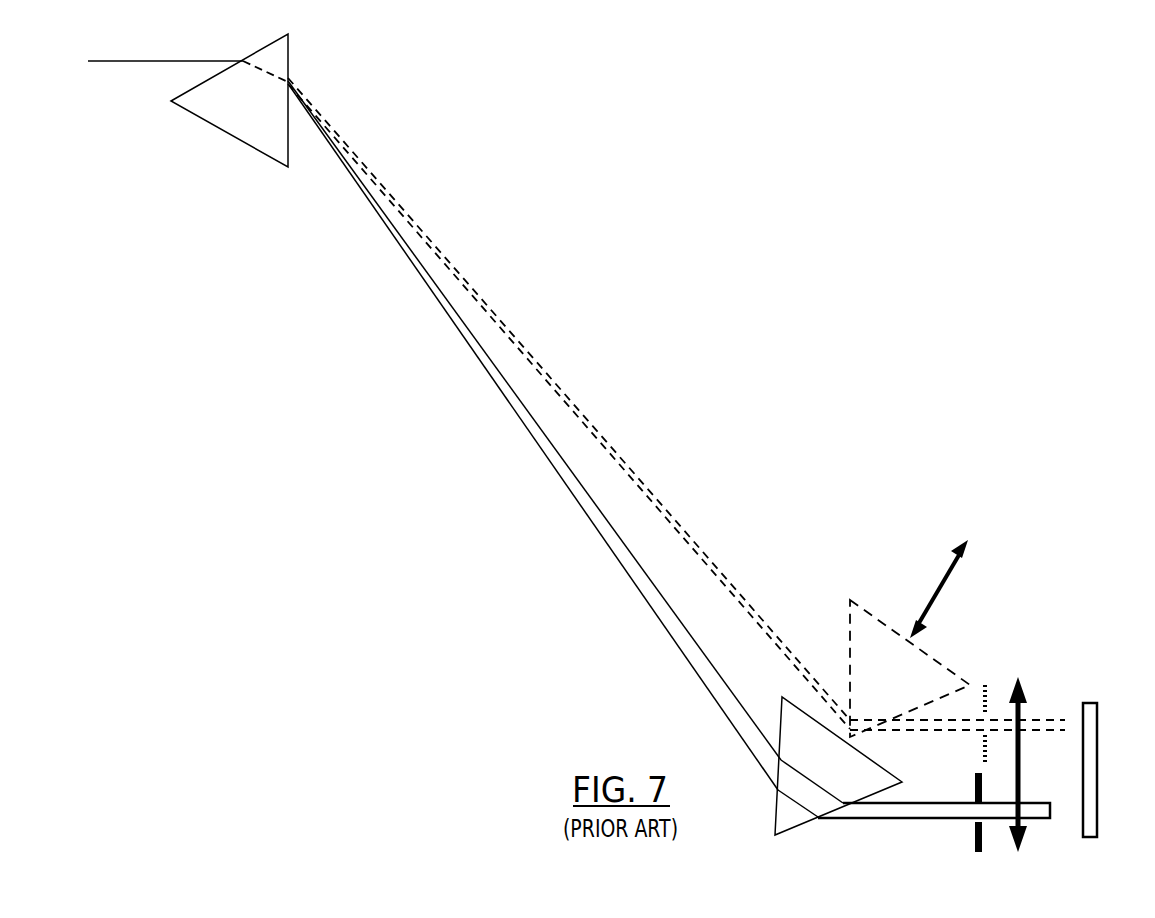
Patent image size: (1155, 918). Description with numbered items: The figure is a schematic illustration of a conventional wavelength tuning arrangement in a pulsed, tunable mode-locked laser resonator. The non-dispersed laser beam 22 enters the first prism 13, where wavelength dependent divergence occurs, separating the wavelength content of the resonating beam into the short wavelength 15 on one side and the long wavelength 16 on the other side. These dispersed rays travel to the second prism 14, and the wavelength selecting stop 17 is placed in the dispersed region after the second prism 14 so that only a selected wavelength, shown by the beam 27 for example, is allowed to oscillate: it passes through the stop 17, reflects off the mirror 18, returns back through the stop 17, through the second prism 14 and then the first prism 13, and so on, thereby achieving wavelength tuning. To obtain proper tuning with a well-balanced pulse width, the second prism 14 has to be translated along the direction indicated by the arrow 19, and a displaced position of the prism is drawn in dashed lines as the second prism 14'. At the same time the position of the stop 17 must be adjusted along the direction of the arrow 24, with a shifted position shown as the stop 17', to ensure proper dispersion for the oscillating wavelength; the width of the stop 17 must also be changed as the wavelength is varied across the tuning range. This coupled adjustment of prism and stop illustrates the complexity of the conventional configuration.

The non-dispersed laser beam 22 is at (137, 64).
The first prism 13 is at (225, 133).
The short wavelength 15 is at (581, 518).
The long wavelength 16 is at (677, 507).
The second prism 14 is at (814, 766).
The second prism (rotated position) 14' is at (888, 660).
The arrow 19 is at (905, 570).
The slit (displaced position) 17' is at (1002, 706).
The wavelength selecting stop 17 is at (961, 801).
The arrow 24 is at (1030, 753).
The mirror 18 is at (1087, 703).
The beam 27 is at (920, 820).